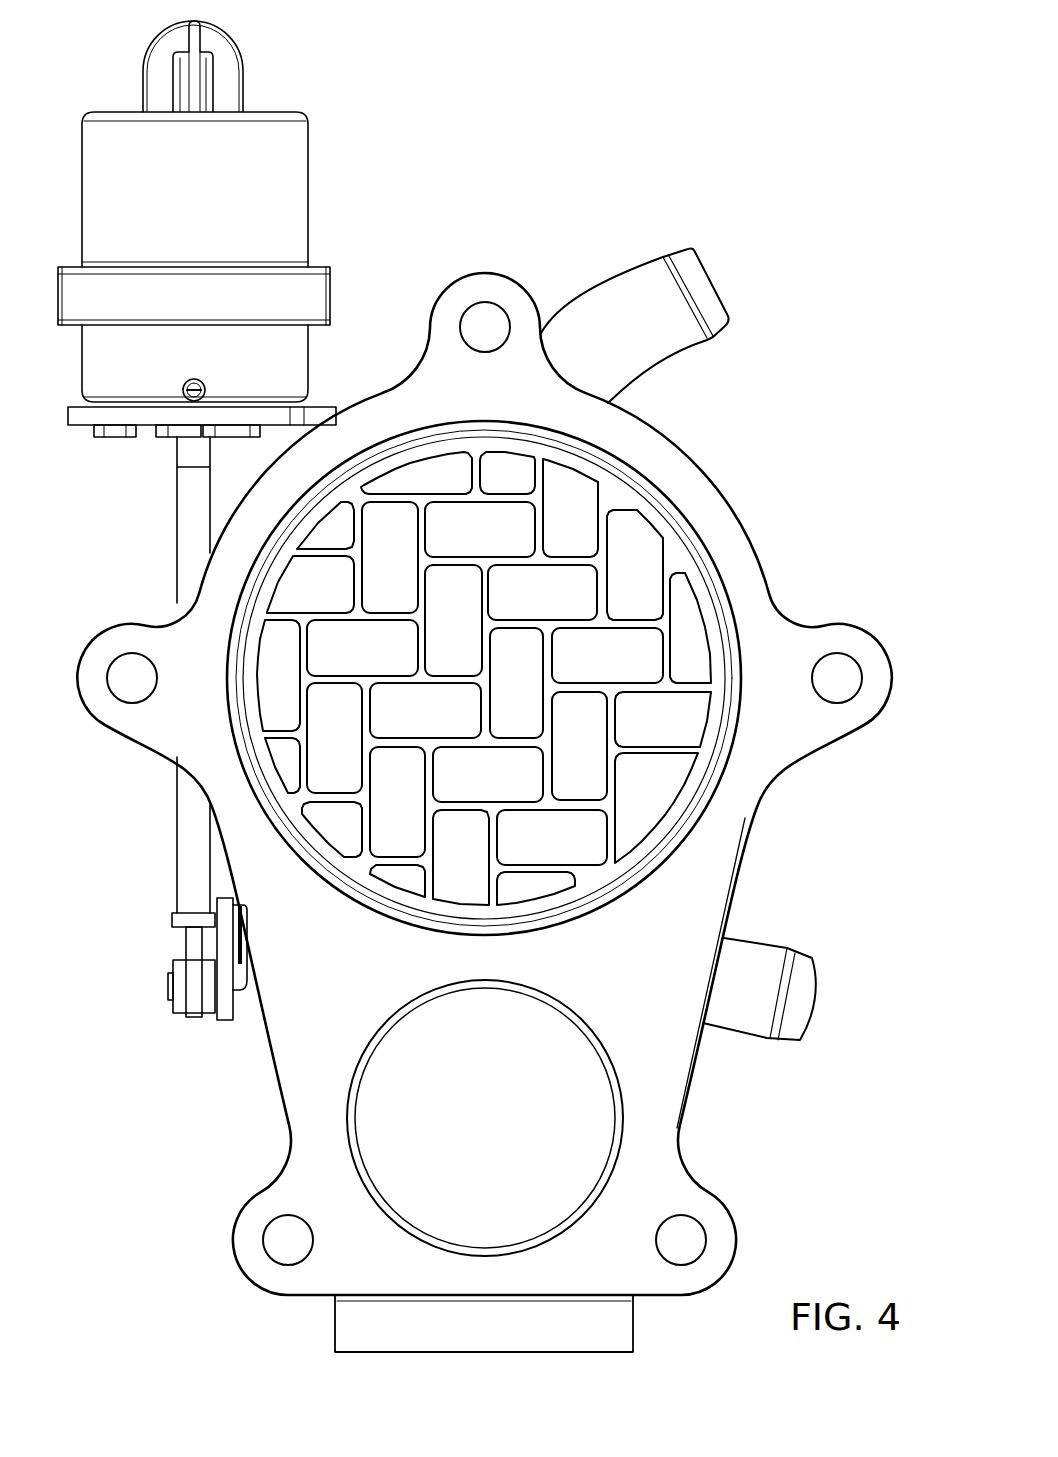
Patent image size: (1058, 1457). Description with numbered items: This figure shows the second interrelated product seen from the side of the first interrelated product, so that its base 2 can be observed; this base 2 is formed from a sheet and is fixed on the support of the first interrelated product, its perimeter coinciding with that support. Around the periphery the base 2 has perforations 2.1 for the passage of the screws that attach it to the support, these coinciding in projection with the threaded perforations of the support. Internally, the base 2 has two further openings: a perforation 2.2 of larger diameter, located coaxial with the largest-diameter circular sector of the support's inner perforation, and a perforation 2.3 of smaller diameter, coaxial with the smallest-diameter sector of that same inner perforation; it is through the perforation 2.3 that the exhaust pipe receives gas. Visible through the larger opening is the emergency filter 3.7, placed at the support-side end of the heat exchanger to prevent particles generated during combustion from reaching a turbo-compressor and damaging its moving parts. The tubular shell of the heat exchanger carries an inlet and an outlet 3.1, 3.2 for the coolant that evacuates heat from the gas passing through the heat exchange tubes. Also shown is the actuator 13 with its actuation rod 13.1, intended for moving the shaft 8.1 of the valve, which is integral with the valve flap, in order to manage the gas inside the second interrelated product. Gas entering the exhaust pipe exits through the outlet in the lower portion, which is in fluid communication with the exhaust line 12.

The base 2 is at (685, 490).
The perforations 2.1 is at (485, 327).
The perforation having a larger diameter 2.2 is at (300, 858).
The perforation having a smaller diameter 2.3 is at (362, 1063).
The inlet 3.1 is at (747, 973).
The outlet 3.2 is at (622, 275).
The emergency filter 3.7 is at (588, 658).
The shaft 8.1 is at (192, 975).
The exhaust line 12 is at (425, 1330).
The actuator 13 is at (159, 194).
The actuation rod 13.1 is at (193, 500).